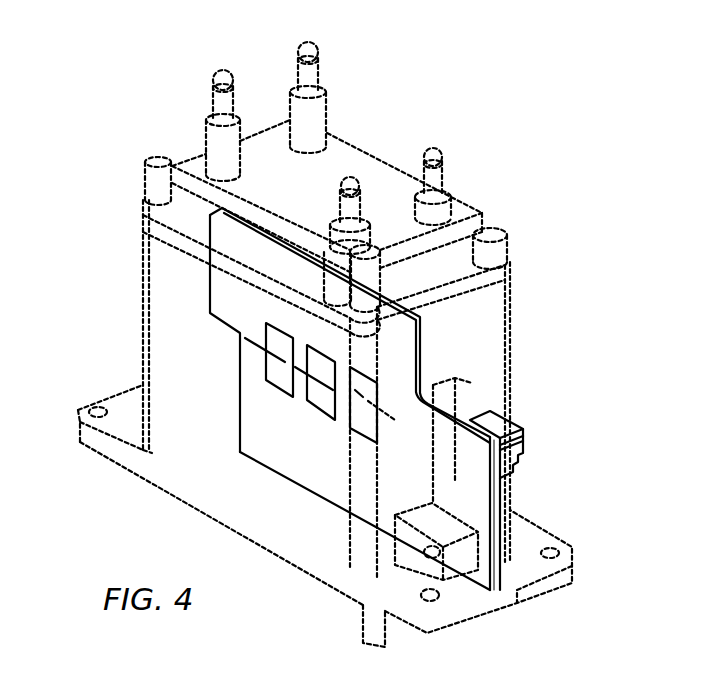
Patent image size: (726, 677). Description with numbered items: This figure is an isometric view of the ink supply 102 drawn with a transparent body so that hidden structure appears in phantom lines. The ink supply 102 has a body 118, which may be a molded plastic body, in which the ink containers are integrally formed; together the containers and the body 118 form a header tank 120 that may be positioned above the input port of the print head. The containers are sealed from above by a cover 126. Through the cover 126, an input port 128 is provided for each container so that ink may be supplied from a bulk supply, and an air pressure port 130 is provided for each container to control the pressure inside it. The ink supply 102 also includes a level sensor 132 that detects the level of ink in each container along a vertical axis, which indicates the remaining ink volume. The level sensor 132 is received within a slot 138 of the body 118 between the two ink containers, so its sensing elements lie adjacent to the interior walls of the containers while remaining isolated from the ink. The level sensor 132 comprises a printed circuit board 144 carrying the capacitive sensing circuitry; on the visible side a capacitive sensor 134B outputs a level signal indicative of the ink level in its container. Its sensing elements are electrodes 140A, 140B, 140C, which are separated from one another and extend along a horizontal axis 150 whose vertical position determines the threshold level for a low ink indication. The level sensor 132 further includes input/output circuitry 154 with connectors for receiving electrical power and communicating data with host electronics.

The ink supply 102 is at (535, 275).
The body 118 is at (163, 338).
The header tank 120 is at (163, 280).
The cover 126 is at (368, 160).
The input port 128 is at (208, 117).
The air pressure port 130 is at (342, 202).
The level sensor 132 is at (562, 397).
The capacitive sensor 134B is at (247, 372).
The slot 138 is at (447, 392).
The electrode 140A is at (275, 383).
The electrode 140B is at (318, 403).
The electrode 140C is at (378, 425).
The printed circuit board 144 is at (493, 487).
The horizontal axis 150 is at (255, 337).
The input/output circuitry 154 is at (517, 452).